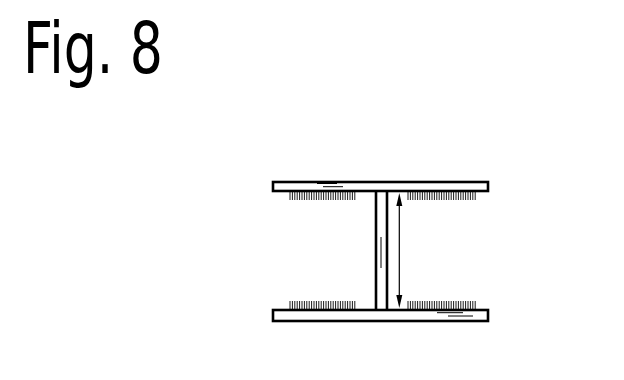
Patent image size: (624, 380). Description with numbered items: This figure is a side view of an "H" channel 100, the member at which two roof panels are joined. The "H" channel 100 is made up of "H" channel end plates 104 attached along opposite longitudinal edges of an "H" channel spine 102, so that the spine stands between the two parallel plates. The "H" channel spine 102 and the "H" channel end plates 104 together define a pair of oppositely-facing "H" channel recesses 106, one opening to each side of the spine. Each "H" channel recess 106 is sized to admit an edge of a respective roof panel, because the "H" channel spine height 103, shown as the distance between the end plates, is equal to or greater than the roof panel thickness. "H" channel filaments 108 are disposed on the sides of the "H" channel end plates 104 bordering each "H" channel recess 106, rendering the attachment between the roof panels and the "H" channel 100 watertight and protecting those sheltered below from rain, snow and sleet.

The "H" channel 100 is at (495, 113).
The "H" channel spine 102 is at (375, 247).
The "H" channel spine height 103 is at (400, 228).
The "H" channel end plate 104 is at (382, 182).
The "H" channel recess 106 is at (305, 227).
The "H" channel filaments 108 is at (319, 302).